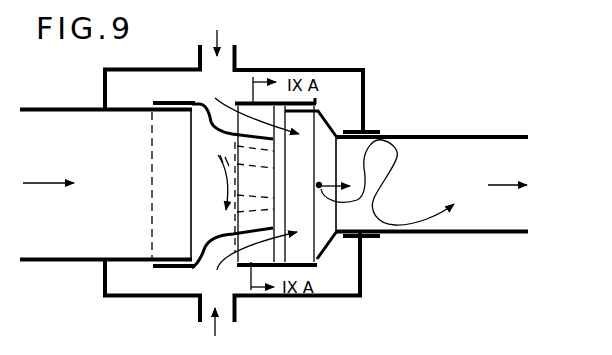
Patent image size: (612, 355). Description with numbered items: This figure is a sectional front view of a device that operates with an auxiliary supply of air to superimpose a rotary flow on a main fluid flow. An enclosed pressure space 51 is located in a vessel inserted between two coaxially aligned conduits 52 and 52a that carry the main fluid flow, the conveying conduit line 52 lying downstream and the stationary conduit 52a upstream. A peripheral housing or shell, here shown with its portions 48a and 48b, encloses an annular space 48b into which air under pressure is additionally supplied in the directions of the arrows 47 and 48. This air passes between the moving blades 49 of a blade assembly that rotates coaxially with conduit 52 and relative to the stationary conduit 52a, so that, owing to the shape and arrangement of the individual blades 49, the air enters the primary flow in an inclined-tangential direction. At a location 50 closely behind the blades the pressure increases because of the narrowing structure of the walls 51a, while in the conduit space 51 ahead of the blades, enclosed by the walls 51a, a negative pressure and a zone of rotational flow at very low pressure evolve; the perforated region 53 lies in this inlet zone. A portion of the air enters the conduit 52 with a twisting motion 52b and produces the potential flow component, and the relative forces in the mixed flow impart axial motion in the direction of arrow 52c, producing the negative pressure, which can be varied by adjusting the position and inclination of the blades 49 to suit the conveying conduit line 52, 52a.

The arrow 47 is at (235, 38).
The arrow 48 is at (228, 327).
The housing upper half 48a is at (257, 69).
The annular space 48b is at (340, 90).
The moving blades 49 is at (252, 93).
The location behind the blades 50 is at (308, 200).
The enclosed pressure space 51 is at (211, 209).
The walls 51a is at (207, 245).
The conduit 52 is at (439, 175).
The stationary conduit 52a is at (132, 226).
The twisting motion 52b is at (398, 157).
The arrow 52c is at (502, 186).
The perforated plate 53 is at (228, 182).